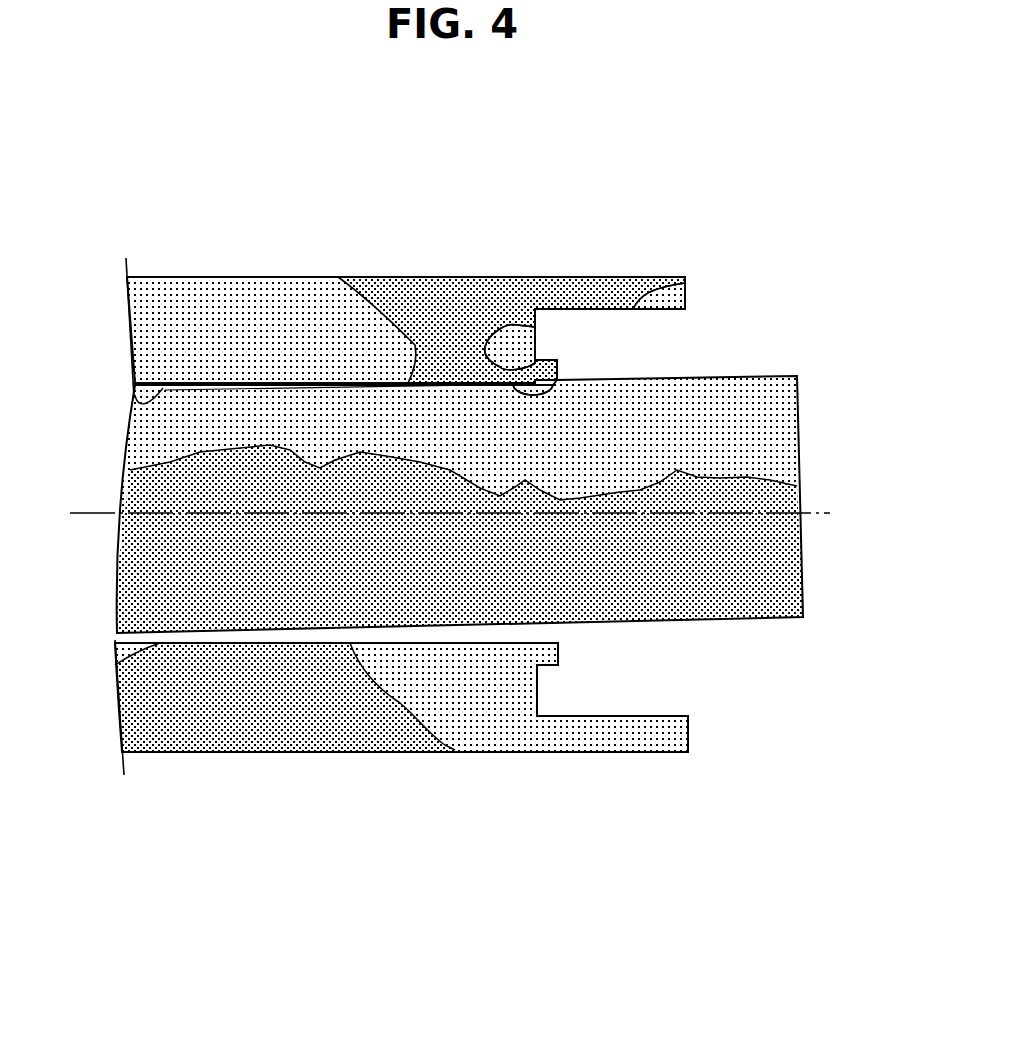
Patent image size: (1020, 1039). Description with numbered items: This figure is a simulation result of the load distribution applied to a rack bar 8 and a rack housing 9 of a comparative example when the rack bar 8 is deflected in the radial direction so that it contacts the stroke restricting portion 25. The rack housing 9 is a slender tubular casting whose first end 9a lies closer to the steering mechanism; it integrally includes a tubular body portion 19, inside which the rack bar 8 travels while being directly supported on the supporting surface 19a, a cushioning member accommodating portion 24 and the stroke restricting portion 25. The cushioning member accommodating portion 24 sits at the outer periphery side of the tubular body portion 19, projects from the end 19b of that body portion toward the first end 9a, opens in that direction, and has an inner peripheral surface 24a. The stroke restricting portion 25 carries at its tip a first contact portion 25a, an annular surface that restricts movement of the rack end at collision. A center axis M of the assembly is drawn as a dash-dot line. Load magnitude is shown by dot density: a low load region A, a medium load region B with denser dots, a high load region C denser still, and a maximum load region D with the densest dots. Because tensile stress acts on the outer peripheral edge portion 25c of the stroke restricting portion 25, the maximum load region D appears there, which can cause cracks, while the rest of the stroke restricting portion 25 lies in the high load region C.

The rack bar 8 is at (770, 578).
The rack housing 9 is at (612, 224).
The first end 9a is at (668, 283).
The tubular body portion 19 is at (395, 298).
The supporting surface 19a is at (135, 395).
The end of tubular body portion 19b is at (537, 325).
The cushioning member accommodating portion 24 is at (590, 295).
The inner peripheral surface 24a is at (670, 310).
The stroke restricting portion 25 is at (510, 373).
The first contact portion 25a is at (558, 377).
The outer peripheral edge portion 25c is at (562, 356).
The low load region A is at (538, 391).
The medium load region B is at (230, 280).
The high load region C is at (636, 281).
The maximum load region D is at (559, 362).
The center axis M is at (76, 500).